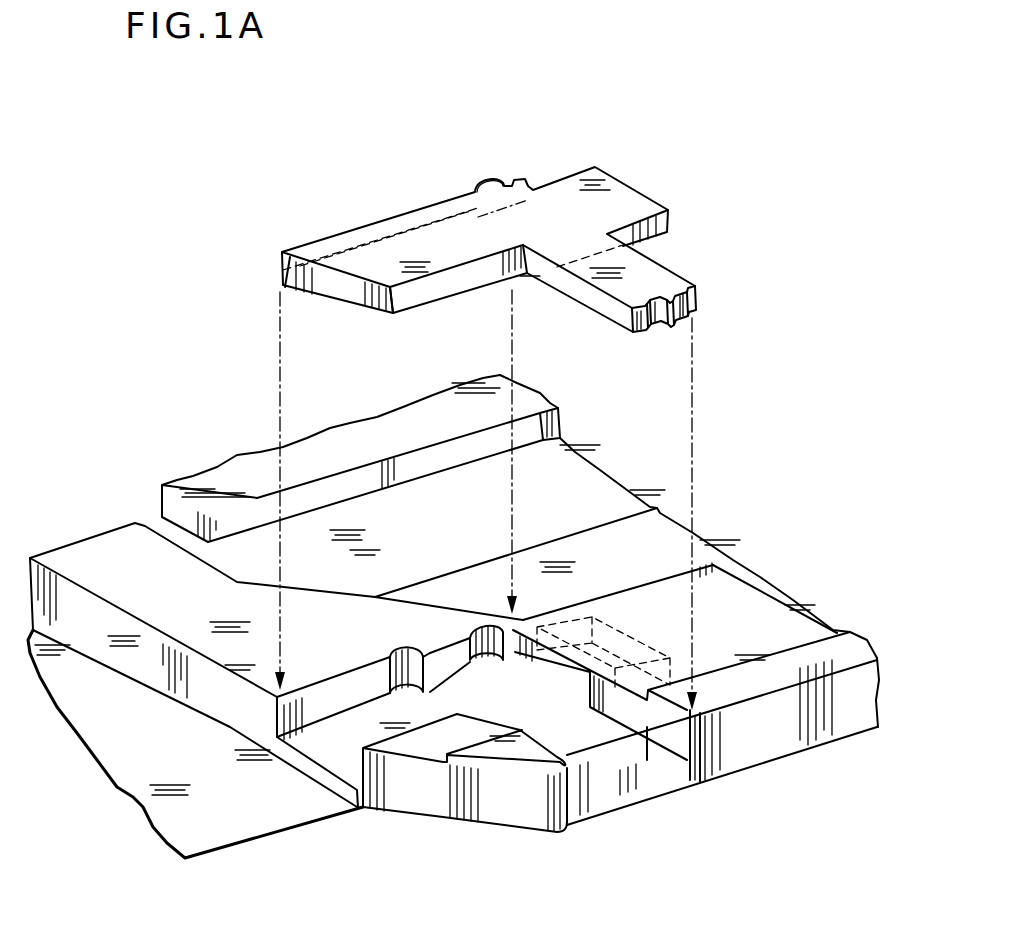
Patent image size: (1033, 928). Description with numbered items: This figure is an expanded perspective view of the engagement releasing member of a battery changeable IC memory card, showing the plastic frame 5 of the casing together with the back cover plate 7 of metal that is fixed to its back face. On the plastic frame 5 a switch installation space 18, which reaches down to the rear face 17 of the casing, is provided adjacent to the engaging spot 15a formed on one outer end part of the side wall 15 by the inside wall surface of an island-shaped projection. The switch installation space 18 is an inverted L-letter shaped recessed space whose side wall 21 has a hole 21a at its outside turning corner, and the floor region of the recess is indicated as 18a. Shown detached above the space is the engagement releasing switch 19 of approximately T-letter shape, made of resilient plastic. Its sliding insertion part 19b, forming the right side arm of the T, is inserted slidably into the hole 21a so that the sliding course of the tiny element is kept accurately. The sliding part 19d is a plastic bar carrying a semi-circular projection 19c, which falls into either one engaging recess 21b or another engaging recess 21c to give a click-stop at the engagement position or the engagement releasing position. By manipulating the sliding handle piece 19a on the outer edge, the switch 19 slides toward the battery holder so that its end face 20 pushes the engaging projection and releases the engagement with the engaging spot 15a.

The plastic frame 5 is at (148, 563).
The back cover plate 7 is at (87, 728).
The side wall 15 is at (107, 627).
The engaging spot 15a is at (433, 750).
The rear face 17 is at (747, 750).
The switch installation space 18 is at (495, 662).
The recess floor 18a is at (340, 747).
The engagement releasing switch 19 is at (429, 199).
The sliding handle piece 19a is at (697, 303).
The sliding insertion part 19b is at (623, 198).
The semi-circular projection 19c is at (490, 177).
The sliding part 19d is at (428, 253).
The end face 20 is at (387, 300).
The side wall 21 is at (627, 707).
The hole 21a is at (548, 680).
The engaging recess 21b is at (630, 710).
The engaging recess 21c is at (420, 668).